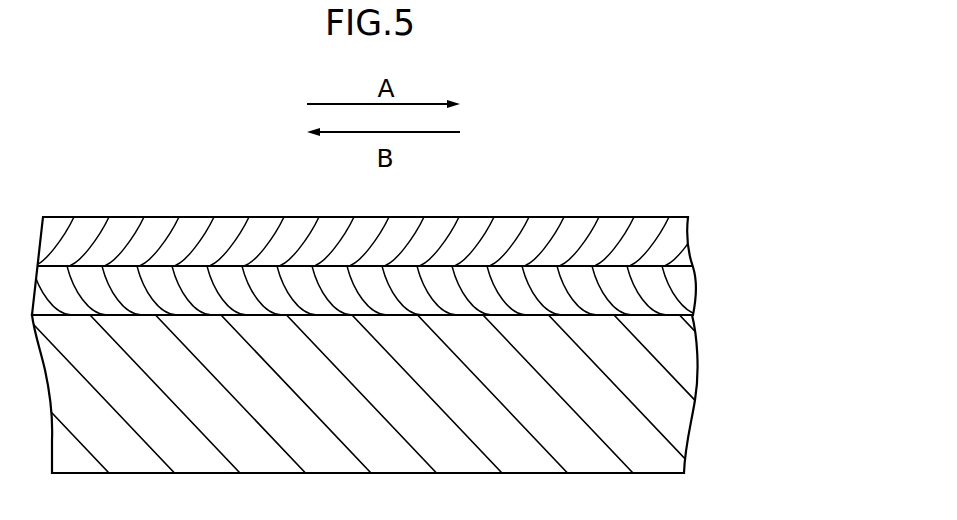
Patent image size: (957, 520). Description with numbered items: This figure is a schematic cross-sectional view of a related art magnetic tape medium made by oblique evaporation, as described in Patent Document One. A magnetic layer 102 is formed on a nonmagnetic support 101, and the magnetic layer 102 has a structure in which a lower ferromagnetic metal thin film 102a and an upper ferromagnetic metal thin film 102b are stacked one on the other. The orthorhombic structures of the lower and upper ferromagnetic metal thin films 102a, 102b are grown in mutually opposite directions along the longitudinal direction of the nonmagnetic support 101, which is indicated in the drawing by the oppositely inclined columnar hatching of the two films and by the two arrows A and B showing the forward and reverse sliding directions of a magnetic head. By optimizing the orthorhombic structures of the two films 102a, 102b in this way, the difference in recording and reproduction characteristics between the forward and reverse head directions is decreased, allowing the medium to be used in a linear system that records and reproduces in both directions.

The nonmagnetic support 101 is at (678, 418).
The magnetic layer 102 is at (432, 266).
The lower ferromagnetic metal thin film 102a is at (678, 288).
The upper ferromagnetic metal thin film 102b is at (678, 239).